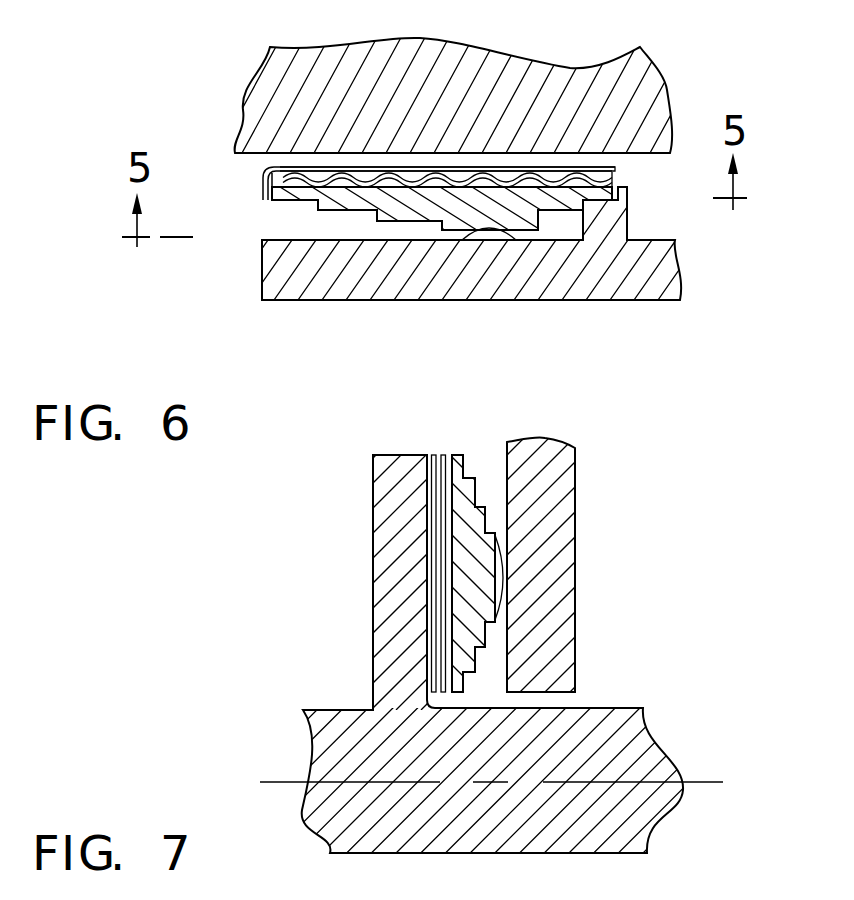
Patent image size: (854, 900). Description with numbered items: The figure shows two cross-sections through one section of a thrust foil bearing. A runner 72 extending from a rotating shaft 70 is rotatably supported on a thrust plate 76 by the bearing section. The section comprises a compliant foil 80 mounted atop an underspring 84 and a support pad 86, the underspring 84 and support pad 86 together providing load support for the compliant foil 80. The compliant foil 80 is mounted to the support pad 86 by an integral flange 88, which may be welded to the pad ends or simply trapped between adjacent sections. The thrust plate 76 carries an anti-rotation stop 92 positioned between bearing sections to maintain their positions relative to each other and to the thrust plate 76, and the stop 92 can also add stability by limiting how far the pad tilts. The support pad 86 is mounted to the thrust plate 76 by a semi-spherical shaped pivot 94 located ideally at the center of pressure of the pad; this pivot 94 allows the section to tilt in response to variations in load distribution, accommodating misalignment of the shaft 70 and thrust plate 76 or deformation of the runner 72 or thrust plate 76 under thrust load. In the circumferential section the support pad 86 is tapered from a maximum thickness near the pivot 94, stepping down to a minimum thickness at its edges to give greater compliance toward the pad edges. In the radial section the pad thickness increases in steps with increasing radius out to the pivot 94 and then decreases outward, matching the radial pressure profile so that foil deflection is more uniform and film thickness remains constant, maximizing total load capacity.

In FIG. 7, the rotating shaft 70 is at (638, 743).
In FIG. 6, the runner 72 is at (452, 45).
In FIG. 7, the runner 72 is at (385, 614).
In FIG. 7, the thrust plate 76 is at (563, 568).
In FIG. 6, the compliant foil 80 is at (615, 170).
In FIG. 7, the compliant foil 80 is at (434, 453).
In FIG. 6, the underspring 84 is at (304, 178).
In FIG. 7, the underspring 84 is at (444, 453).
In FIG. 6, the support pad 86 is at (337, 210).
In FIG. 7, the support pad 86 is at (457, 453).
In FIG. 6, the integral flange 88 is at (260, 189).
In FIG. 6, the anti-rotation stop 92 is at (620, 224).
In FIG. 6, the semi-spherical shaped pivot 94 is at (474, 243).
In FIG. 7, the semi-spherical shaped pivot 94 is at (503, 580).